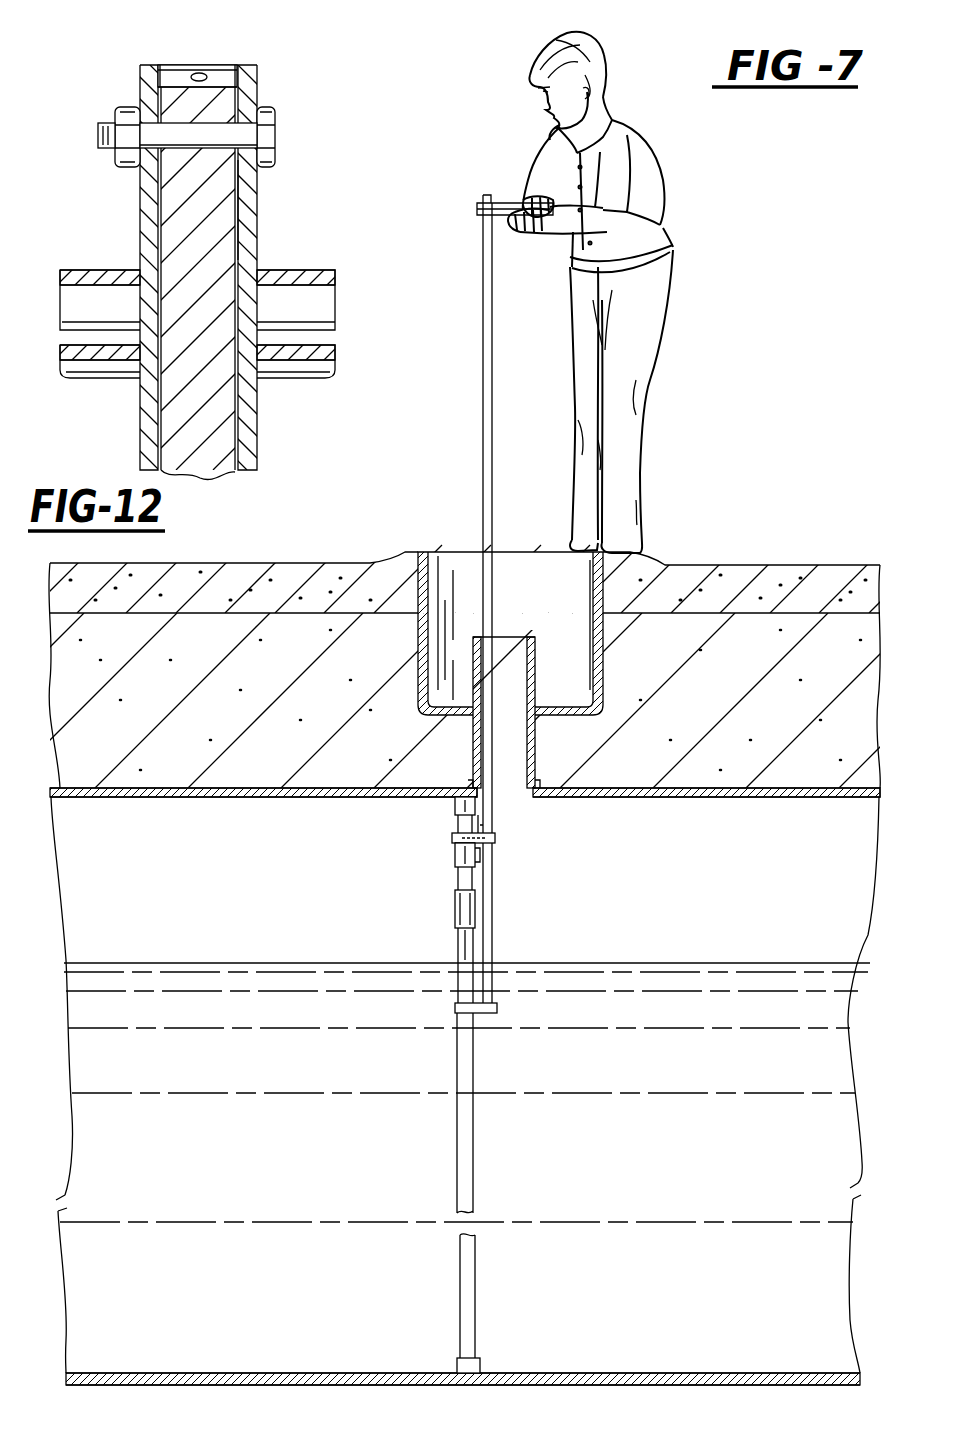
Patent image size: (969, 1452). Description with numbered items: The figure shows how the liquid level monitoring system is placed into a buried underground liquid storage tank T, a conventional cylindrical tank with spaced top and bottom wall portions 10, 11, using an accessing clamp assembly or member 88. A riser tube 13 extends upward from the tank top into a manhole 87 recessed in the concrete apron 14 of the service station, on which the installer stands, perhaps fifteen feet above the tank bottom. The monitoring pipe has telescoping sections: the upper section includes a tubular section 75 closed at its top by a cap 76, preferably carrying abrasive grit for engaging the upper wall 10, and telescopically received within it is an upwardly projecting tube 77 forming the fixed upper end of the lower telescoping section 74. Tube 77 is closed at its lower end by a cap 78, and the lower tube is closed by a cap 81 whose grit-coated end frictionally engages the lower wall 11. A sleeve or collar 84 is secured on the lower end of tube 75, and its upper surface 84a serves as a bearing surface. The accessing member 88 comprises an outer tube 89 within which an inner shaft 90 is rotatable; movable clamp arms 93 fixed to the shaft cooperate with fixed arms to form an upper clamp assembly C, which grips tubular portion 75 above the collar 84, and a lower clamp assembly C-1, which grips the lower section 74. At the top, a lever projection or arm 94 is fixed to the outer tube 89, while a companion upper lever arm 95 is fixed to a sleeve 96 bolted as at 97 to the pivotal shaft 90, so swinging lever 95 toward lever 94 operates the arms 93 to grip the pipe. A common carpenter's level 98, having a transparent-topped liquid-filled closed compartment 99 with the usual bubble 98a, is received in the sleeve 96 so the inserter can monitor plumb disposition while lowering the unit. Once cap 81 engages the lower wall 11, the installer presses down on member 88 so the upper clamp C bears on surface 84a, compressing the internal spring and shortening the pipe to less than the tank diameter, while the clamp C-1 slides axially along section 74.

In FIG. 7, the top wall portion 10 is at (258, 788).
In FIG. 7, the bottom wall portion 11 is at (330, 1372).
In FIG. 7, the riser tube 13 is at (535, 760).
In FIG. 7, the concrete apron 14 is at (343, 575).
In FIG. 7, the lower telescoping section 74 is at (460, 1072).
In FIG. 7, the tubular section 75 is at (480, 823).
In FIG. 7, the cap 76 is at (455, 803).
In FIG. 7, the upwardly projecting tube 77 is at (455, 878).
In FIG. 7, the cap 78 is at (455, 913).
In FIG. 7, the cap 81 is at (478, 1365).
In FIG. 7, the sleeve or collar 84 is at (455, 853).
In FIG. 7, the upper surface 84a is at (486, 850).
In FIG. 7, the manhole 87 is at (605, 677).
In FIG. 12, the accessing clamp assembly 88 is at (321, 254).
In FIG. 7, the accessing clamp assembly 88 is at (482, 504).
In FIG. 12, the outer tube 89 is at (258, 392).
In FIG. 7, the outer tube 89 is at (492, 423).
In FIG. 12, the inner shaft 90 is at (228, 188).
In FIG. 7, the clamp arms 93 is at (496, 838).
In FIG. 12, the lever projection or arm 94 is at (337, 352).
In FIG. 12, the upper lever arm 95 is at (318, 272).
In FIG. 12, the sleeve 96 is at (258, 251).
In FIG. 12, the bolt 97 is at (248, 133).
In FIG. 12, the carpenter's level 98 is at (211, 60).
In FIG. 12, the bubble 98a is at (217, 63).
In FIG. 12, the closed compartment 99 is at (222, 88).
In FIG. 7, the upper clamp assembly C is at (452, 835).
In FIG. 7, the lower clamp assembly C-1 is at (452, 1008).
In FIG. 7, the underground liquid storage tank T is at (465, 1064).